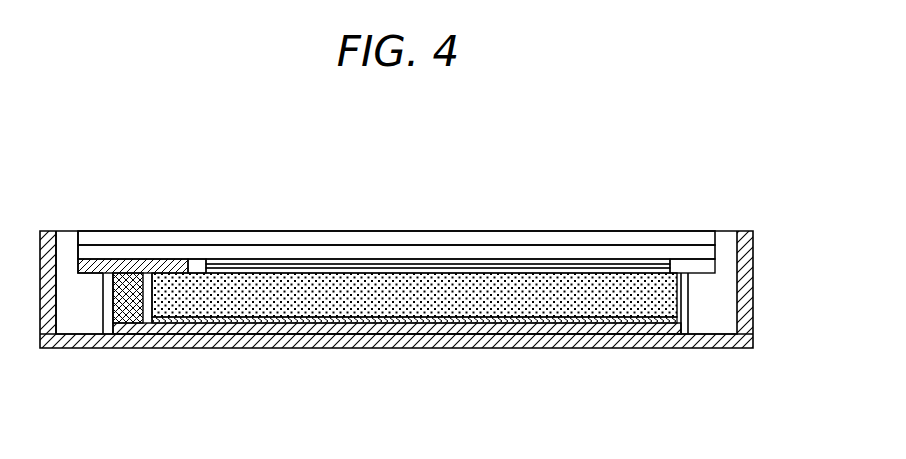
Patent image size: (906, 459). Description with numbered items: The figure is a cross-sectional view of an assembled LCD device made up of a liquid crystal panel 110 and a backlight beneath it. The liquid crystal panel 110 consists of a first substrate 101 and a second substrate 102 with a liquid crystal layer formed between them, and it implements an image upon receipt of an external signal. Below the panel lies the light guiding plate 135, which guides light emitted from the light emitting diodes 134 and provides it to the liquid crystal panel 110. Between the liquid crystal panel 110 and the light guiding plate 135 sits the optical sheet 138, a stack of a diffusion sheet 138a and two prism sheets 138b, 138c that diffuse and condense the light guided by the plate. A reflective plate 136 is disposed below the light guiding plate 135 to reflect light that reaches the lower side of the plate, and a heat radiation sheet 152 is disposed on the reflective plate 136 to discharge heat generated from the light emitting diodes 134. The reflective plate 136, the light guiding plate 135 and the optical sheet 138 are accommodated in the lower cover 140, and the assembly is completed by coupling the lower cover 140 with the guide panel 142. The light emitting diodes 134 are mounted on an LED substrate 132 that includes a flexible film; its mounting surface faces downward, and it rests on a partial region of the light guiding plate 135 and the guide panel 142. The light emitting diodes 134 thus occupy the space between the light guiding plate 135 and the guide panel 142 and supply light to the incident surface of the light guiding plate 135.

The liquid crystal panel 110 is at (738, 211).
The first substrate 101 is at (236, 240).
The second substrate 102 is at (284, 255).
The LED substrate 132 is at (137, 263).
The light emitting diodes 134 is at (129, 320).
The light guiding plate 135 is at (465, 295).
The reflective plate 136 is at (417, 318).
The optical sheet 138 is at (460, 205).
The diffusion sheet 138a is at (414, 262).
The prism sheet 138b is at (463, 267).
The prism sheet 138c is at (395, 173).
The lower cover 140 is at (329, 340).
The guide panel 142 is at (71, 323).
The heat radiation sheet 152 is at (375, 325).